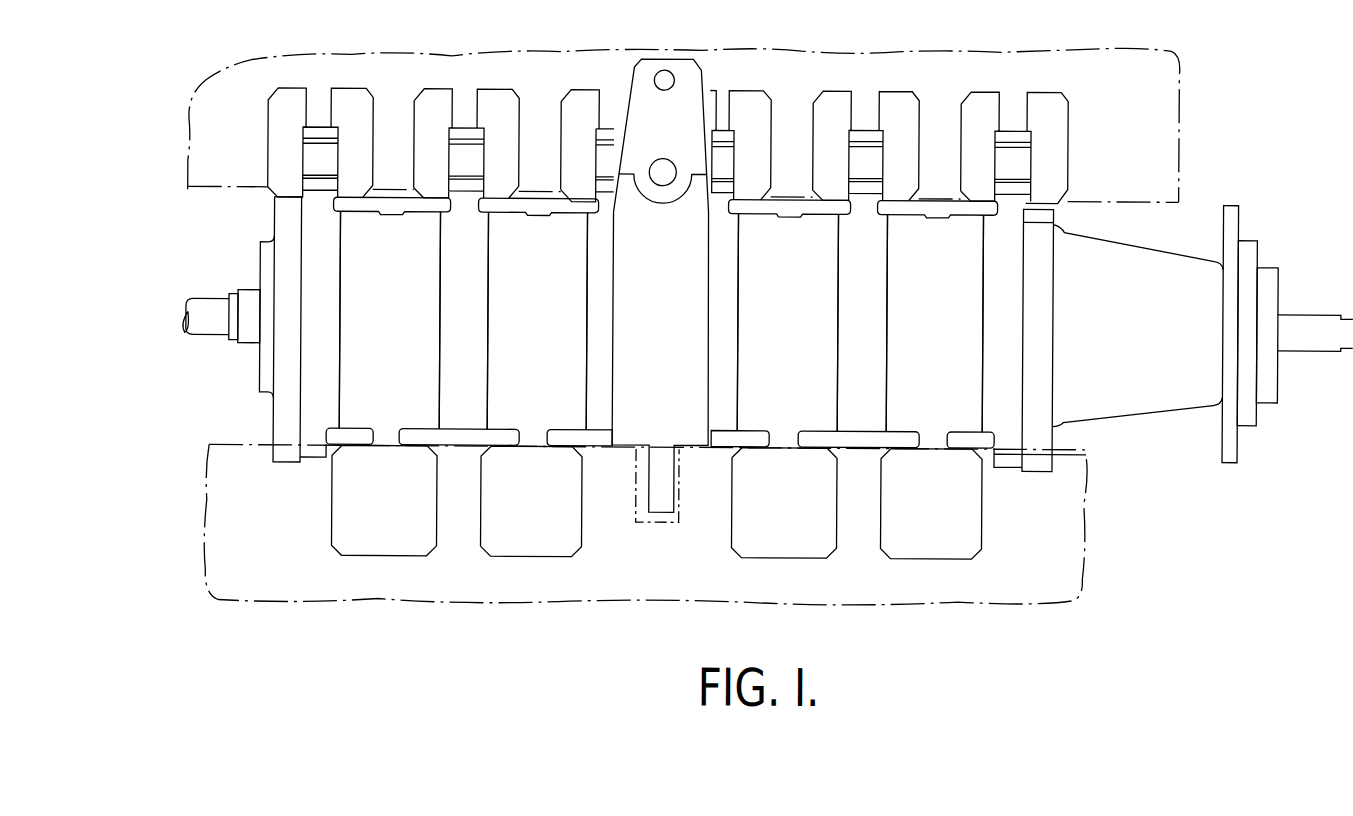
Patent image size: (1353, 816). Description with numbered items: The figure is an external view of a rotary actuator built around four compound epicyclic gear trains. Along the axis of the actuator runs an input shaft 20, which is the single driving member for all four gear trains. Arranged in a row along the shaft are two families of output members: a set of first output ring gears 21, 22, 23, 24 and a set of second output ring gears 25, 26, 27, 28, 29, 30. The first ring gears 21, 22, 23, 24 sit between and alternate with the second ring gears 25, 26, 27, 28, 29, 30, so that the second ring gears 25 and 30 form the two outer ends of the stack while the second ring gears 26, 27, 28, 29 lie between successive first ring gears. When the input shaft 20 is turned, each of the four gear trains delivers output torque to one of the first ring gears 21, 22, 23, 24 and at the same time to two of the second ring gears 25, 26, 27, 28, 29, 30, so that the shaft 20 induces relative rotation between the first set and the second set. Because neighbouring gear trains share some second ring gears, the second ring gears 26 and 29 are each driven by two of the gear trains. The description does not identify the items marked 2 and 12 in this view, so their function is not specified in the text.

The central lever 2 is at (627, 470).
The support foot 12 is at (322, 470).
The input shaft 20 is at (1313, 332).
The first output ring gear 21 is at (393, 381).
The first output ring gear 22 is at (557, 382).
The first output ring gear 23 is at (793, 381).
The first output ring gear 24 is at (947, 382).
The second output ring gear 25 is at (312, 238).
The second output ring gear 26 is at (462, 250).
The second output ring gear 27 is at (605, 260).
The second output ring gear 28 is at (722, 262).
The second output ring gear 29 is at (867, 262).
The second output ring gear 30 is at (998, 298).